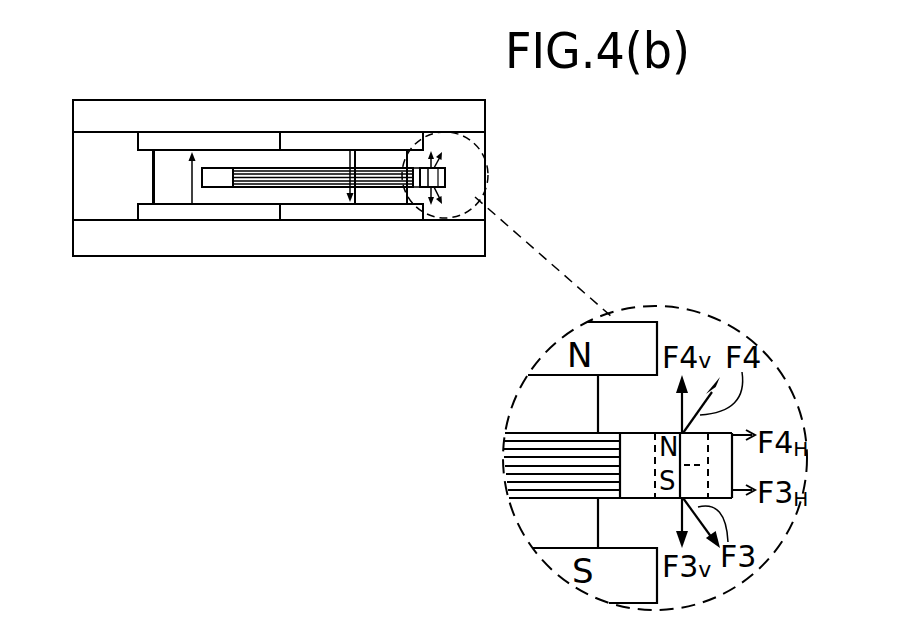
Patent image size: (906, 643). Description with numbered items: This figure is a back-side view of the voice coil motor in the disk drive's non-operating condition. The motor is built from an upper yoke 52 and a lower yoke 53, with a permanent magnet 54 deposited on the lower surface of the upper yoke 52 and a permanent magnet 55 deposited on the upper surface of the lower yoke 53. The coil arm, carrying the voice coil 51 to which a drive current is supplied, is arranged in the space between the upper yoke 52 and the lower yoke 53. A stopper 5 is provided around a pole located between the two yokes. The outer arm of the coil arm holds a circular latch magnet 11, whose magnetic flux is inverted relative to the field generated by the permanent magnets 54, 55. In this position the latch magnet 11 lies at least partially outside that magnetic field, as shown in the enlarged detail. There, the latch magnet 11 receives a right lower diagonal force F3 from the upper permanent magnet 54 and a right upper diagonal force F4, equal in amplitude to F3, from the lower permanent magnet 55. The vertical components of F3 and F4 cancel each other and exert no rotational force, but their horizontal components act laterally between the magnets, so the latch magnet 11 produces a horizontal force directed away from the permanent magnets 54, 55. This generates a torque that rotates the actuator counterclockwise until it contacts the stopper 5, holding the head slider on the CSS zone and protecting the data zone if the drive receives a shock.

The upper yoke 52 is at (193, 127).
The lower yoke 53 is at (183, 236).
The permanent magnet 54 is at (395, 140).
The permanent magnet 55 is at (365, 213).
The voice coil 51 is at (312, 187).
The latch magnet 11 is at (425, 190).
The stopper 5 is at (481, 192).
The right upper diagonal force F4 is at (468, 184).
The right lower diagonal force F3 is at (473, 192).